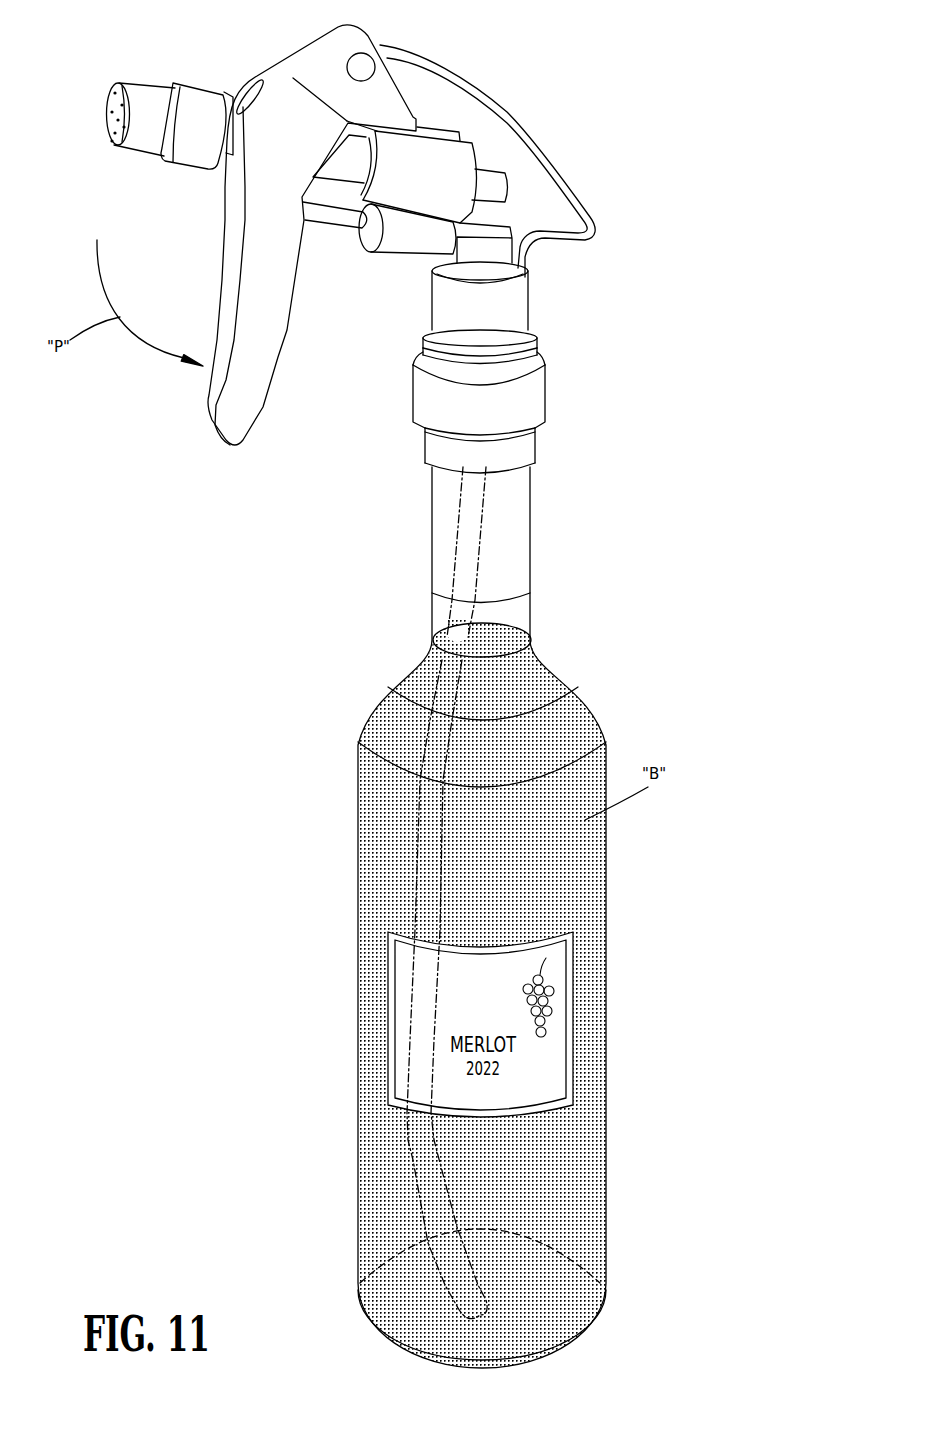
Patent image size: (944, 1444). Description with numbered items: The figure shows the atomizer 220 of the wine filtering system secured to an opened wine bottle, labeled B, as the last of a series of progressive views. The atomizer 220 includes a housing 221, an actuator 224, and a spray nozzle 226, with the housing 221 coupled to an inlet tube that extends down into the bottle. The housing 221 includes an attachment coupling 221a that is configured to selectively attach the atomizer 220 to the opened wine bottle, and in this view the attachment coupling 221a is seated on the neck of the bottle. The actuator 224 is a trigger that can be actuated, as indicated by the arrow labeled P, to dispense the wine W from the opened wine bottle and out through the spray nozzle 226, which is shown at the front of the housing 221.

The atomizer 220 is at (513, 383).
The housing 221 is at (433, 163).
The attachment coupling 221a is at (547, 397).
The actuator 224 is at (233, 427).
The spray nozzle 226 is at (145, 92).